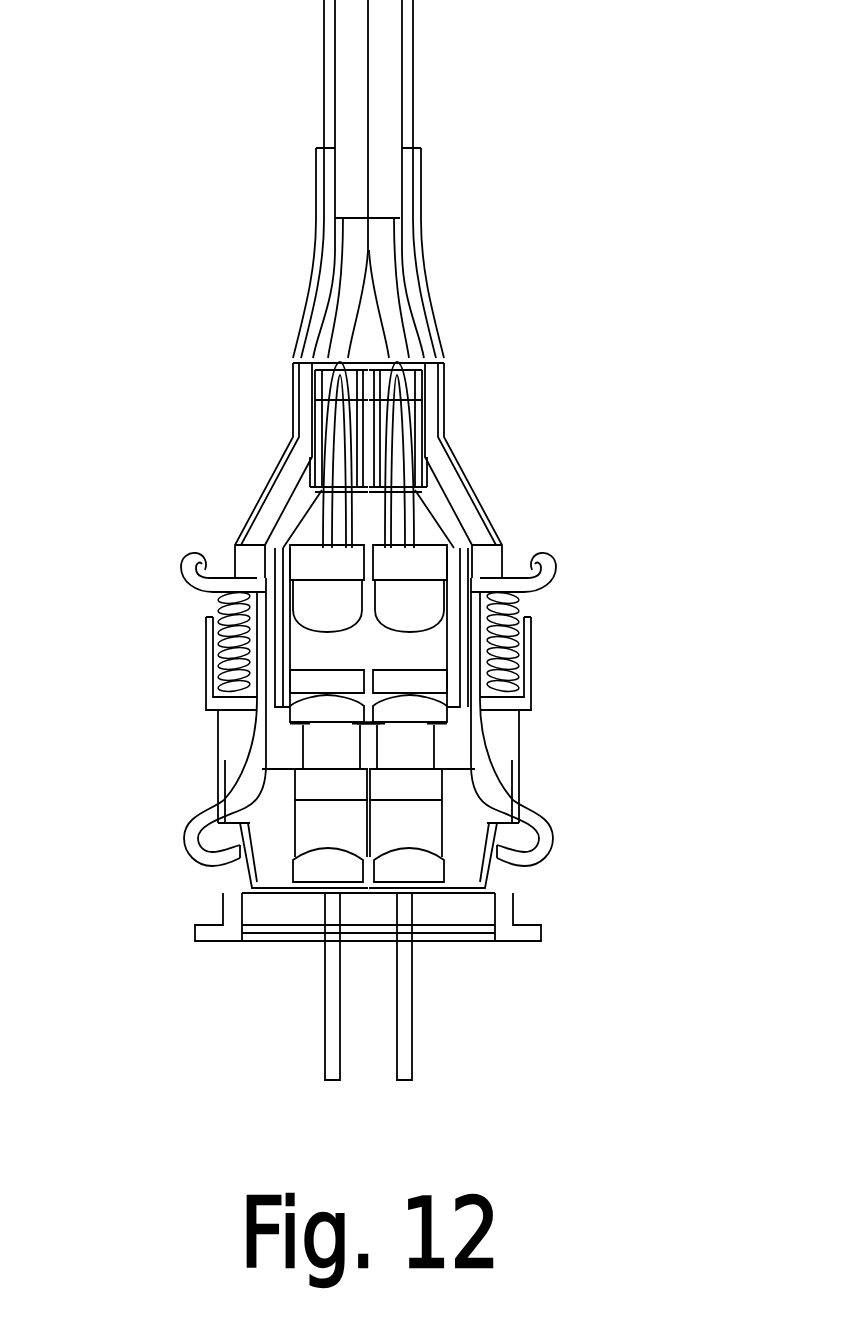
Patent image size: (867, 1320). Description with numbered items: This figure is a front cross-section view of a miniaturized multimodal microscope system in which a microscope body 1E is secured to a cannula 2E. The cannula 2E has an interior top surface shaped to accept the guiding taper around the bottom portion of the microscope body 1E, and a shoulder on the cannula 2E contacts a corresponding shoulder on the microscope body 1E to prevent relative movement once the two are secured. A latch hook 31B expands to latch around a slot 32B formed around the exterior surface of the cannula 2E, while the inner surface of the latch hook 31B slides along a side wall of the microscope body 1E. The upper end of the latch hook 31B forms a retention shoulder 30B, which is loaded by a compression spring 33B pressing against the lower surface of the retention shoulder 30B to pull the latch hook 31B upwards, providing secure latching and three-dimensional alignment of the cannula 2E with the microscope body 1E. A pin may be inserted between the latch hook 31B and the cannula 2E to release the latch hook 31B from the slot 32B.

The microscope body 1E is at (310, 522).
The cannula 2E is at (298, 918).
The retention shoulder 30B is at (550, 565).
The latch hook 31B is at (187, 840).
The slot 32B is at (490, 875).
The compression spring 33B is at (524, 645).